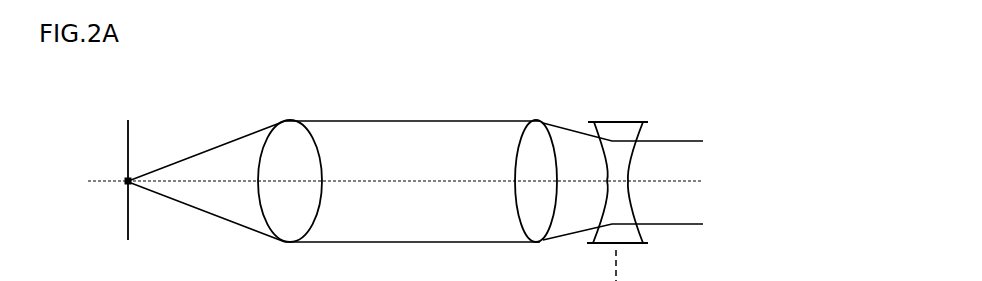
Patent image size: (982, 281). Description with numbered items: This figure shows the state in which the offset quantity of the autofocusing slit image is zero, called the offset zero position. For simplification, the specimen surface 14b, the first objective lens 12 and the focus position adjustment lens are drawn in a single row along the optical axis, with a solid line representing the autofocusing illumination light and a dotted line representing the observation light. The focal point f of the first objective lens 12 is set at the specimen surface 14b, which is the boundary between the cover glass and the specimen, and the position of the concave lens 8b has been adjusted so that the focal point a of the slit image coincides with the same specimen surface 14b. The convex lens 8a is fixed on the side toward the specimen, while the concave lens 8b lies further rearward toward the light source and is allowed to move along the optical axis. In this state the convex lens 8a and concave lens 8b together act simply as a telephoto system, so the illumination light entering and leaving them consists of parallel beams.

The specimen surface 14b is at (128, 120).
The first objective lens 12 is at (286, 120).
The convex lens 8a is at (534, 121).
The concave lens 8b is at (615, 122).